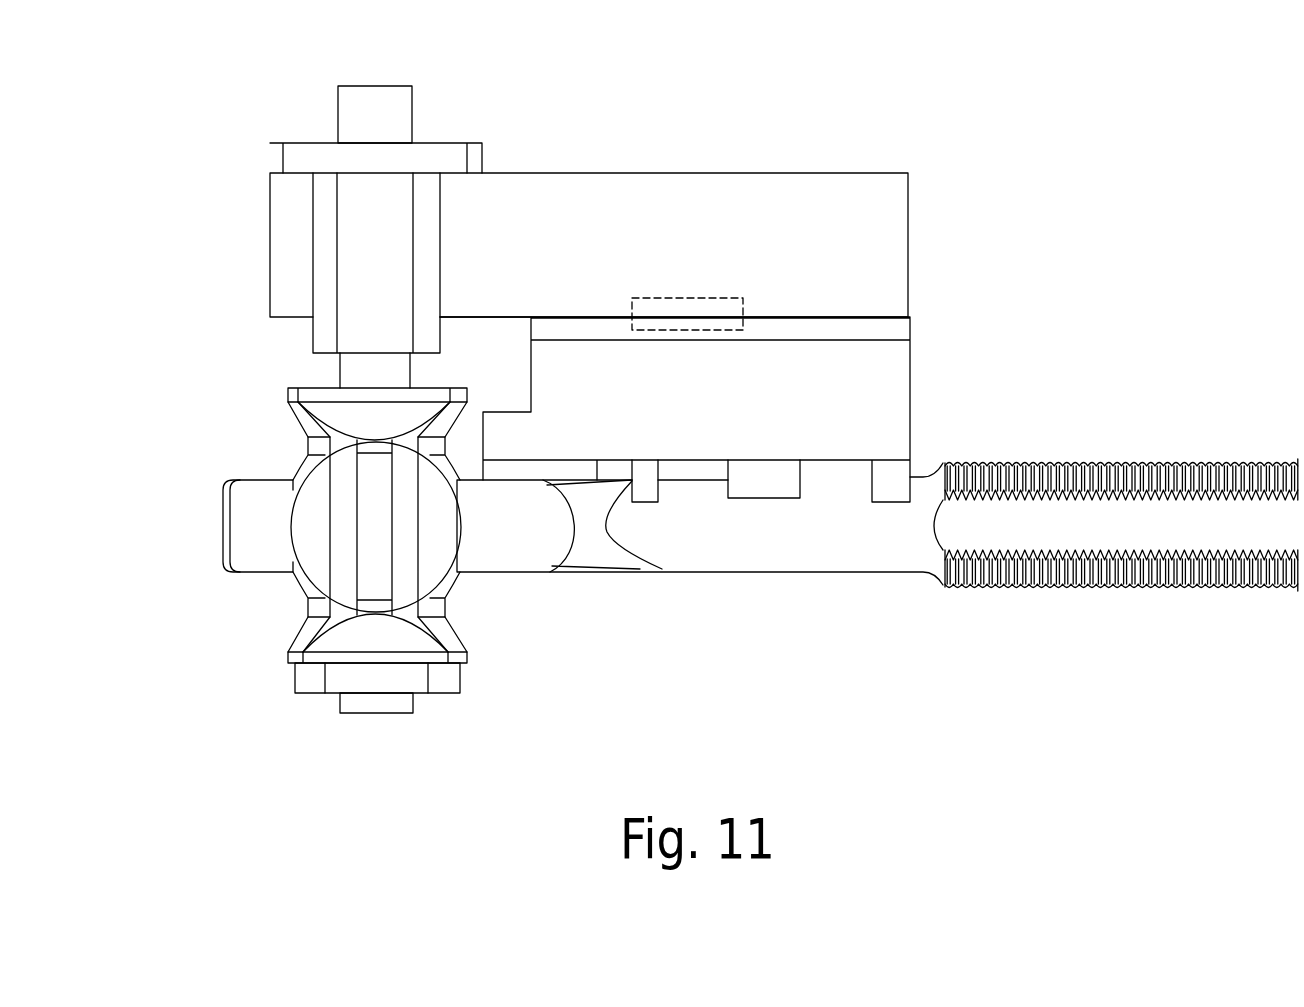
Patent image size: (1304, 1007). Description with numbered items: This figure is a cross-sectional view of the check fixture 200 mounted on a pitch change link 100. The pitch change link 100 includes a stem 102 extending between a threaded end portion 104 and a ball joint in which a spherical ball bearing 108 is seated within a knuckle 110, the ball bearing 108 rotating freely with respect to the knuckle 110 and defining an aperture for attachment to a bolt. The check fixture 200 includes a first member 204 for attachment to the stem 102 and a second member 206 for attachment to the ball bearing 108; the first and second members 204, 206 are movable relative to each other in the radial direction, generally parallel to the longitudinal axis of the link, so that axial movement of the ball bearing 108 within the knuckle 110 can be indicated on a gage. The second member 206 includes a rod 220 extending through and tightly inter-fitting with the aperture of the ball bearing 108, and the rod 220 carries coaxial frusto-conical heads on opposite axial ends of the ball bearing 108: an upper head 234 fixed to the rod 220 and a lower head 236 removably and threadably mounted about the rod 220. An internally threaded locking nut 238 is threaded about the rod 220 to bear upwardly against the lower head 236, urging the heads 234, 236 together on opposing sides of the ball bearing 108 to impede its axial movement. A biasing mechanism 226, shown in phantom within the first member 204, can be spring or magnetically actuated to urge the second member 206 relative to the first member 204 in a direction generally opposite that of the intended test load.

The check fixture 200 is at (824, 80).
The pitch change link 100 is at (530, 578).
The stem 102 is at (725, 555).
The threaded end portion 104 is at (1165, 585).
The ball bearing 108 is at (328, 563).
The knuckle 110 is at (245, 523).
The first member 204 is at (843, 410).
The second member 206 is at (360, 330).
The rod 220 is at (377, 373).
The biasing mechanism 226 is at (743, 297).
The upper head 234 is at (350, 408).
The lower head 236 is at (317, 652).
The locking nut 238 is at (378, 682).